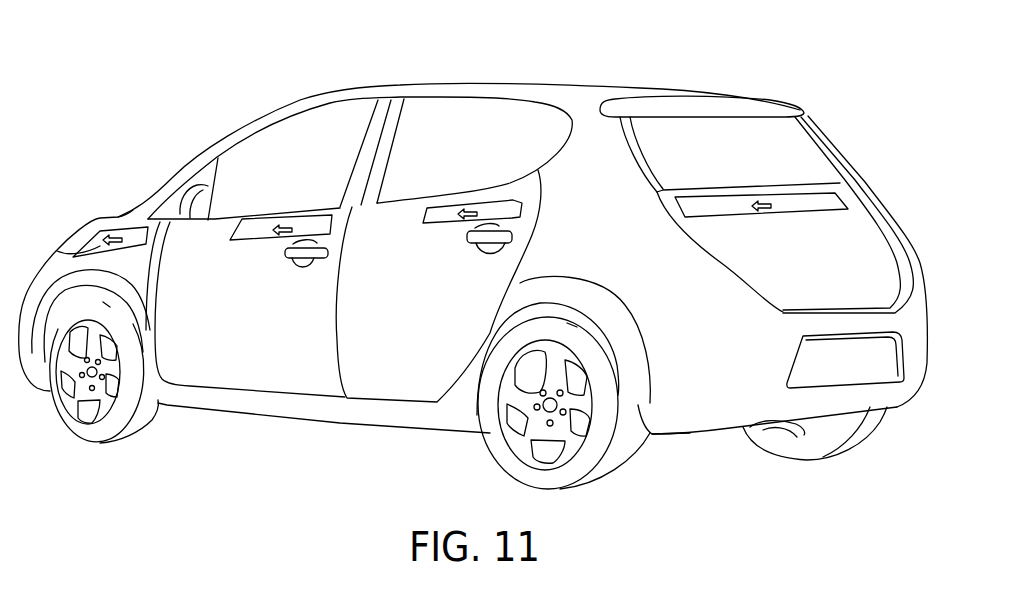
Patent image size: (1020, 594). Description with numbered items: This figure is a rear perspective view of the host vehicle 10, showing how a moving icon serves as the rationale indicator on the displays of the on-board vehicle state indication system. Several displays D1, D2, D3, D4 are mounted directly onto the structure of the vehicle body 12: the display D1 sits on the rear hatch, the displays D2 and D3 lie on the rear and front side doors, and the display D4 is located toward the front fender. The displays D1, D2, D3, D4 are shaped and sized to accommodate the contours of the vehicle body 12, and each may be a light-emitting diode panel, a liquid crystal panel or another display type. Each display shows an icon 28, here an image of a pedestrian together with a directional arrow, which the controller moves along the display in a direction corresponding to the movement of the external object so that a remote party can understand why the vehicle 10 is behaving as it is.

The host vehicle 10 is at (756, 47).
The vehicle body 12 is at (773, 100).
The icon 28 is at (129, 229).
The display D1 is at (822, 219).
The display D2 is at (424, 224).
The display D3 is at (240, 241).
The display D4 is at (127, 250).